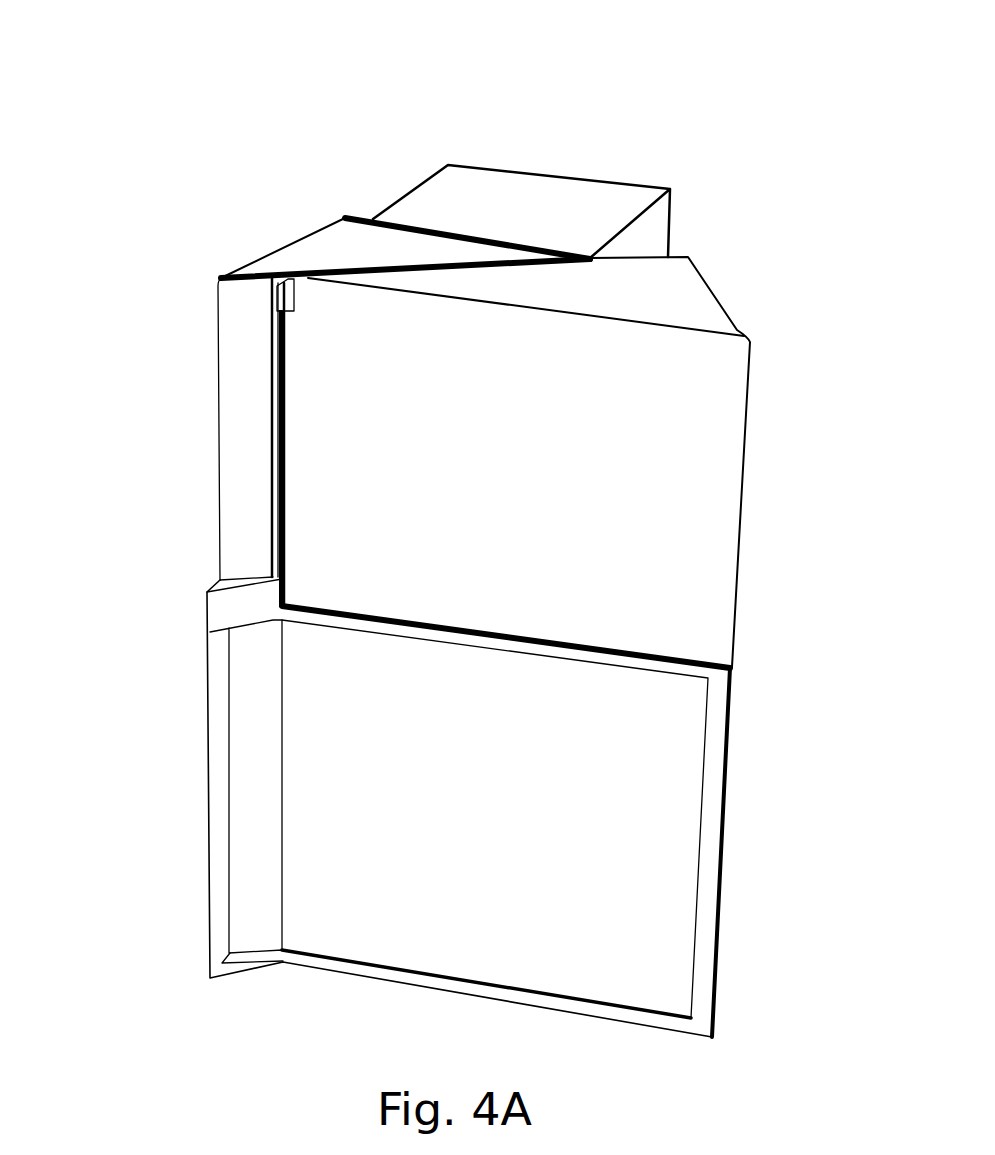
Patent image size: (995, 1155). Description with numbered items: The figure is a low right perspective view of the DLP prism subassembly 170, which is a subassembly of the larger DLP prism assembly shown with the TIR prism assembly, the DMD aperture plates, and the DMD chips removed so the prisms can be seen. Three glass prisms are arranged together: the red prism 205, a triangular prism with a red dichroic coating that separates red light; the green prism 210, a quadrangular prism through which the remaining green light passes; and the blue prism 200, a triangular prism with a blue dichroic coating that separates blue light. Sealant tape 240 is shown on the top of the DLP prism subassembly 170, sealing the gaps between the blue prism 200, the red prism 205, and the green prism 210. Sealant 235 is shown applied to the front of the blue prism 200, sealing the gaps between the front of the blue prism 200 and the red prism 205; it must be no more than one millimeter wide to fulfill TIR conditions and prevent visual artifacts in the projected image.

The DLP prism subassembly 170 is at (178, 88).
The red prism 205 is at (288, 254).
The green prism 210 is at (545, 128).
The blue prism 200 is at (760, 252).
The sealant tape 240 is at (459, 236).
The sealant 235 is at (285, 453).